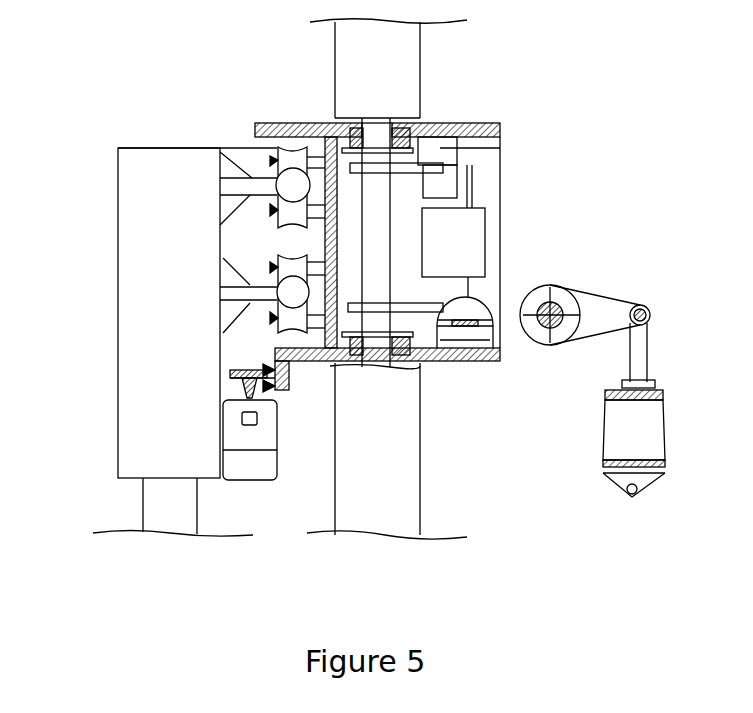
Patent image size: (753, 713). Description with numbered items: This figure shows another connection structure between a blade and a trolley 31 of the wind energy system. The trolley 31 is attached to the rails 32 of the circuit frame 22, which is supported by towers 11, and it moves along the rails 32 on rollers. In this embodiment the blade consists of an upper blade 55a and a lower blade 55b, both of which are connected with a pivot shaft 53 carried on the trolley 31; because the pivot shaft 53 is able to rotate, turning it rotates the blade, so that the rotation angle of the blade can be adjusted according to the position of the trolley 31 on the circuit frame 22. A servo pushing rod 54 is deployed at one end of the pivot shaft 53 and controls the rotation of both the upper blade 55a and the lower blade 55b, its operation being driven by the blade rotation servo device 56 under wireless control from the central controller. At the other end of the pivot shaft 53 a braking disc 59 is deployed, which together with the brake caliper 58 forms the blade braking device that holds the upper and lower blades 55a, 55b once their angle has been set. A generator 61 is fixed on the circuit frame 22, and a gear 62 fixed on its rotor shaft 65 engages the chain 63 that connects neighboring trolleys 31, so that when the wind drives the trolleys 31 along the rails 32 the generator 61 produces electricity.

The tower 11 is at (180, 503).
The circuit frame 22 is at (180, 378).
The trolley 31 is at (283, 122).
The rail 32 is at (273, 263).
The pivot shaft 53 is at (377, 203).
The servo pushing rod 54 is at (403, 307).
The upper blade 55a is at (388, 68).
The lower blade 55b is at (387, 451).
The blade rotation servo device 56 is at (497, 363).
The brake caliper 58 is at (500, 148).
The braking disc 59 is at (425, 148).
The generator 61 is at (252, 462).
The gear 62 is at (232, 377).
The chain 63 is at (270, 367).
The rotor shaft 65 is at (247, 382).